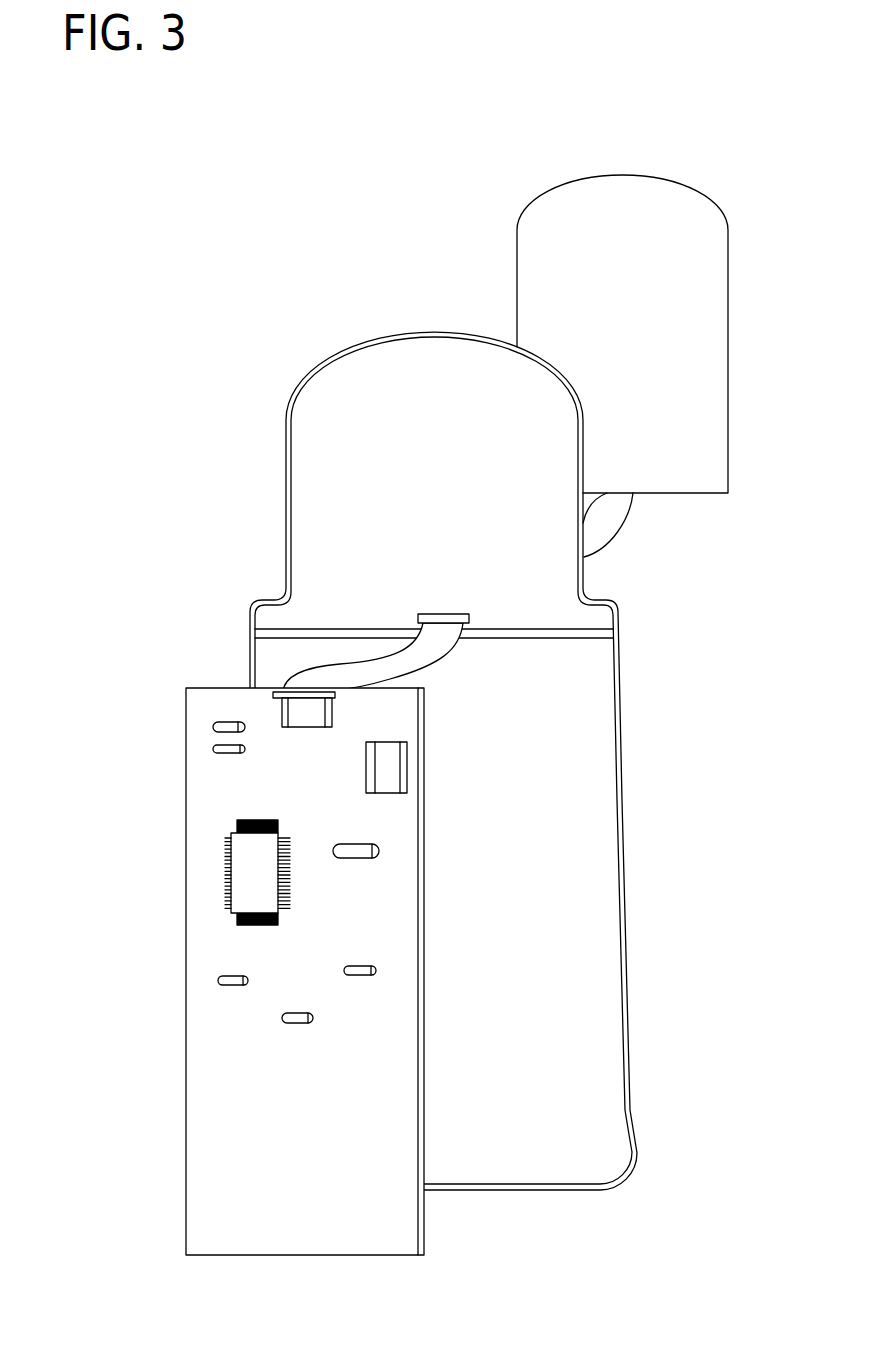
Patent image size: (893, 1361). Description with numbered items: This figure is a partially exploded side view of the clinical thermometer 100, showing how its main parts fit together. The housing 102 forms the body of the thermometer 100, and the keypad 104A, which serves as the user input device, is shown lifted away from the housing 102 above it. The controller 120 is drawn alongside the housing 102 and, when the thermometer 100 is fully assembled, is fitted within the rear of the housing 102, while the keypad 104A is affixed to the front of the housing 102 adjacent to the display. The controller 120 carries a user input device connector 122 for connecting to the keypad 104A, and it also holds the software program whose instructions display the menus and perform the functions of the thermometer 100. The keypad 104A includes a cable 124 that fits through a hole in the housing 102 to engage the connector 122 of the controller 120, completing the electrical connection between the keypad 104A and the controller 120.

The thermometer 100 is at (475, 88).
The housing 102 is at (358, 393).
The keypad 104A is at (588, 253).
The controller 120 is at (216, 1107).
The user input device connector 122 is at (307, 712).
The cable 124 is at (605, 523).